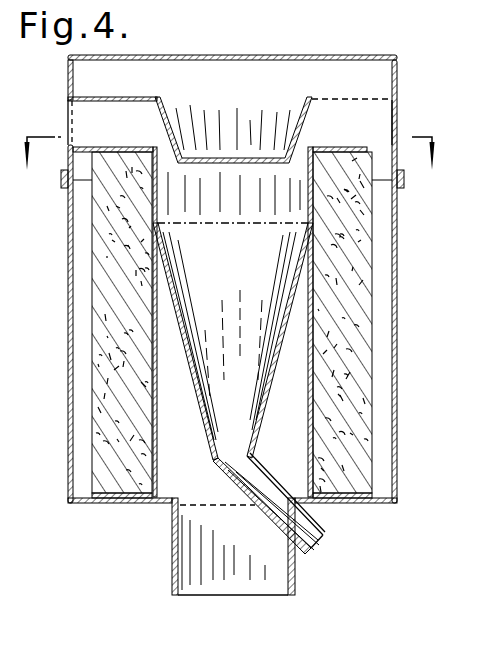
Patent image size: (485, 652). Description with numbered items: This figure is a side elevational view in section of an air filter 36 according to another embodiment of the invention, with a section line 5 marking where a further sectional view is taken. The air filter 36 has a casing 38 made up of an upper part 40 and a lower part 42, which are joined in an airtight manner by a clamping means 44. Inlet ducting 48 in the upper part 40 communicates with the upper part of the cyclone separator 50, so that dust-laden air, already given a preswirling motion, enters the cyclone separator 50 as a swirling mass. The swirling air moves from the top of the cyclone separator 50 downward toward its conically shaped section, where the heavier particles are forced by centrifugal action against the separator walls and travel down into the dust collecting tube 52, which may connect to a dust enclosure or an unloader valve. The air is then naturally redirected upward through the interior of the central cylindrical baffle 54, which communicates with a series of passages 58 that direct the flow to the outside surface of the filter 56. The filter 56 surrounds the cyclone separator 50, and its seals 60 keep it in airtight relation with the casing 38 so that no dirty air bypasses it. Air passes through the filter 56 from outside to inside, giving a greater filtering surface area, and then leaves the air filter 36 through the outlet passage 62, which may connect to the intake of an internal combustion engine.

The air filter 36 is at (348, 55).
The casing 38 is at (260, 298).
The upper part 40 is at (398, 78).
The lower part 42 is at (398, 301).
The clamping means 44 is at (63, 188).
The inlet ducting 48 is at (128, 100).
The cyclone separator 50 is at (256, 271).
The dust collecting tube 52 is at (318, 542).
The central cylindrical baffle 54 is at (291, 133).
The filter 56 is at (355, 362).
The passages 58 is at (365, 128).
The seals 60 is at (320, 152).
The outlet passage 62 is at (275, 582).
The section line 5- 5 is at (229, 169).